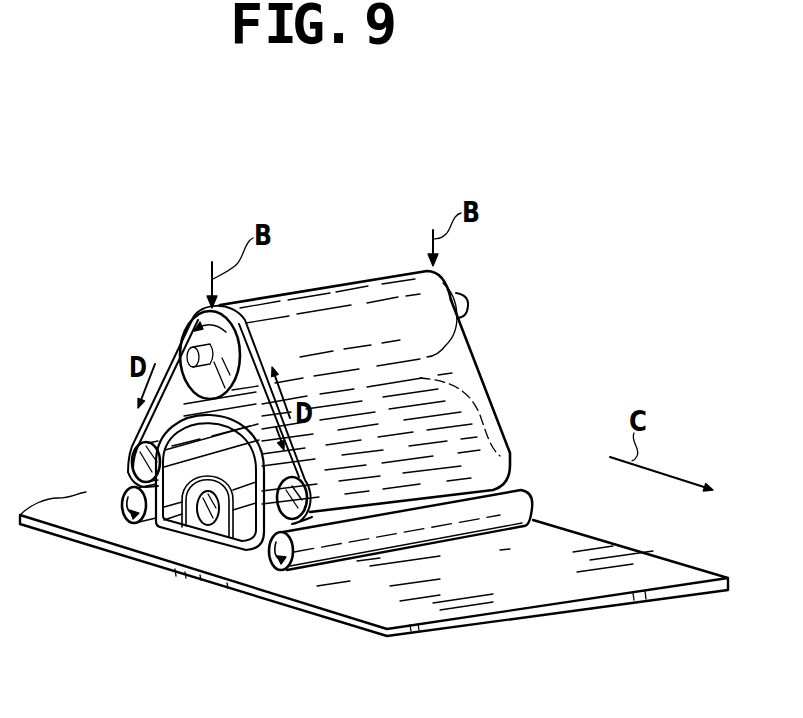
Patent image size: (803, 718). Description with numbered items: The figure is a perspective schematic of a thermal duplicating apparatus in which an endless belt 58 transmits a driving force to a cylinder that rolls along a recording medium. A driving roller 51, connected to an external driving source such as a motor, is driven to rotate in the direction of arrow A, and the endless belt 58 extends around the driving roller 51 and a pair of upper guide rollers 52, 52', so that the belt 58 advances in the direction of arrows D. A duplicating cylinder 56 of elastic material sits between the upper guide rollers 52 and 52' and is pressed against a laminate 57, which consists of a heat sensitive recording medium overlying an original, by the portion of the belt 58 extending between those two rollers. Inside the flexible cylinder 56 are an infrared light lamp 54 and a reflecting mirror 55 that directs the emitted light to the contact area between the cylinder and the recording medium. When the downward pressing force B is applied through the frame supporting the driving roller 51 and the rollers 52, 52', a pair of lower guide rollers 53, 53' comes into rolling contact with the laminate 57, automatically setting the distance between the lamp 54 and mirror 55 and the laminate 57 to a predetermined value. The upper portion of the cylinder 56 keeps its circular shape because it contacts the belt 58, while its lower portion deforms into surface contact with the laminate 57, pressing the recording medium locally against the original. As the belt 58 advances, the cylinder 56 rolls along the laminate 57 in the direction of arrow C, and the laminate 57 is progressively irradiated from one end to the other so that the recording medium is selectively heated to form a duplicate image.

The driving roller 51 is at (433, 280).
The upper guide roller 52 is at (115, 458).
The upper guide roller 52' is at (541, 431).
The lower guide roller 53 is at (105, 531).
The lower guide roller 53' is at (437, 530).
The infrared light lamp 54 is at (207, 522).
The reflecting mirror 55 is at (241, 491).
The duplicating cylinder 56 is at (170, 533).
The laminate 57 is at (313, 598).
The endless belt 58 is at (470, 383).